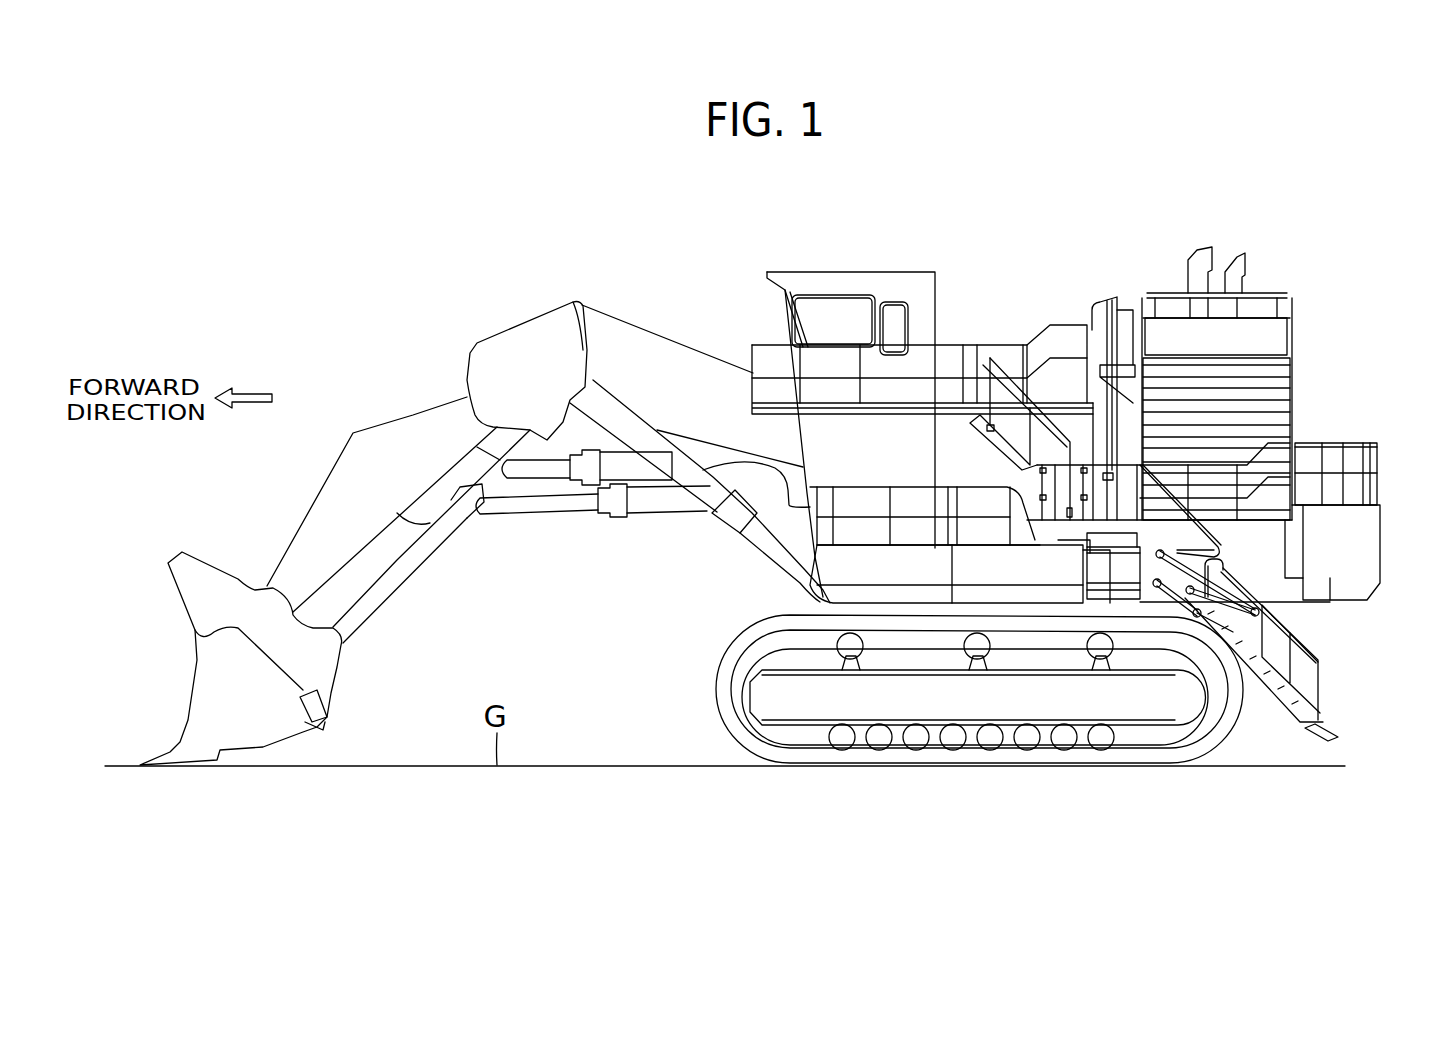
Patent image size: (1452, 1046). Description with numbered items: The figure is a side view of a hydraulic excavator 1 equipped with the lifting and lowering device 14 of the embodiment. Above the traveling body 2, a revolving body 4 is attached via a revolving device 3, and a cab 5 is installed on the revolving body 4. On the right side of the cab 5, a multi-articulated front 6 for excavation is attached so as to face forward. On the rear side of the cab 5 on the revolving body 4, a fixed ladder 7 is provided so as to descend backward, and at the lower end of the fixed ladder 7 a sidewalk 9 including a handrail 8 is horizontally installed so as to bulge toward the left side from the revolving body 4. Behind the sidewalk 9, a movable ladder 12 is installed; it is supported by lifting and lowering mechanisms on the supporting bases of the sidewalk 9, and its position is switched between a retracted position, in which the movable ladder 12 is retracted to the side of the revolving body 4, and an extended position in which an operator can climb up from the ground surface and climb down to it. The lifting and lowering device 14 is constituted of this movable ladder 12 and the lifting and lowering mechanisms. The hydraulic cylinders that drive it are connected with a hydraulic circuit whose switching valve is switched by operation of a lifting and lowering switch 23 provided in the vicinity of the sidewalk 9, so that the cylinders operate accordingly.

The hydraulic excavator 1 is at (442, 261).
The traveling body 2 is at (957, 703).
The revolving device 3 is at (880, 614).
The revolving body 4 is at (1358, 541).
The cab 5 is at (843, 280).
The multi-articulated front 6 is at (550, 330).
The fixed ladder 7 is at (998, 440).
The handrail 8 is at (1110, 463).
The sidewalk 9 is at (1084, 549).
The movable ladder 12 is at (1295, 698).
The lifting and lowering device 14 is at (1313, 623).
The lifting and lowering switch 23 is at (1112, 476).